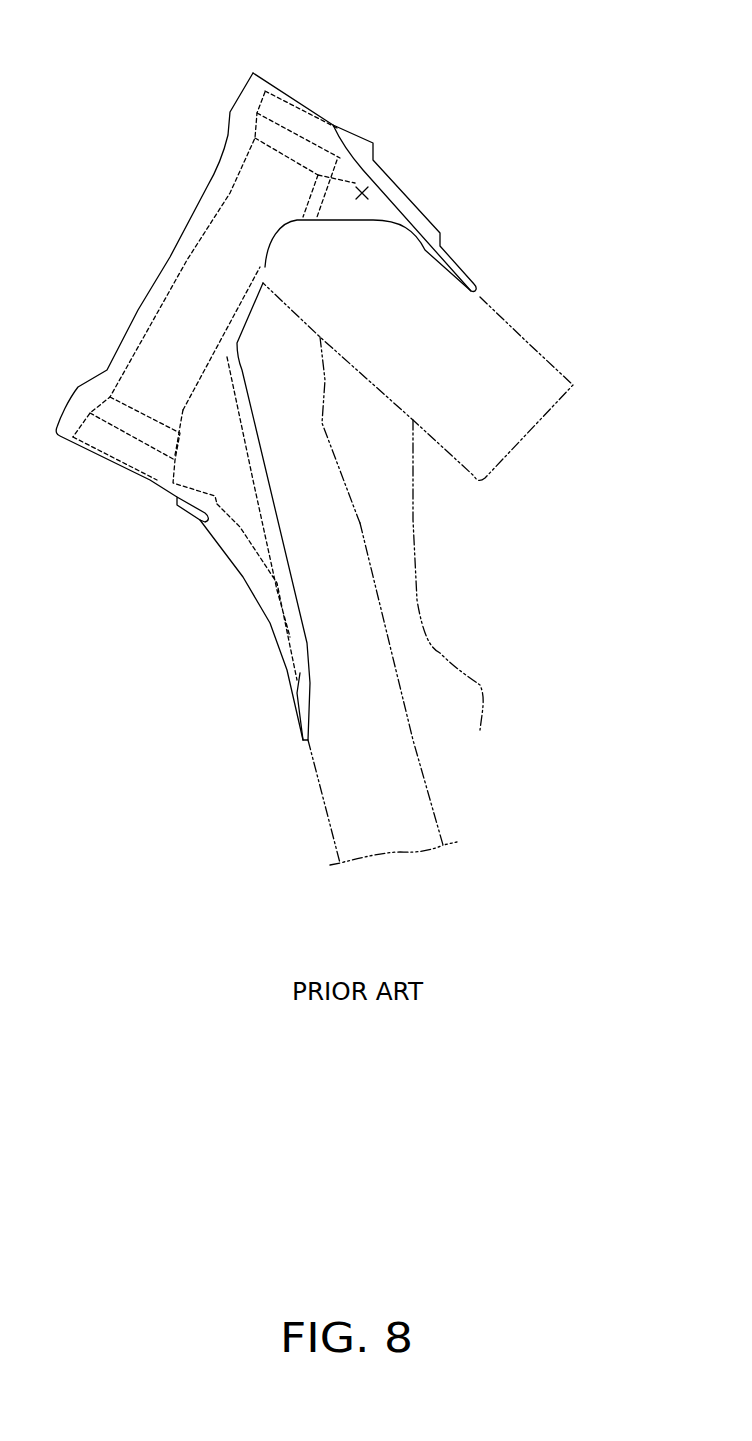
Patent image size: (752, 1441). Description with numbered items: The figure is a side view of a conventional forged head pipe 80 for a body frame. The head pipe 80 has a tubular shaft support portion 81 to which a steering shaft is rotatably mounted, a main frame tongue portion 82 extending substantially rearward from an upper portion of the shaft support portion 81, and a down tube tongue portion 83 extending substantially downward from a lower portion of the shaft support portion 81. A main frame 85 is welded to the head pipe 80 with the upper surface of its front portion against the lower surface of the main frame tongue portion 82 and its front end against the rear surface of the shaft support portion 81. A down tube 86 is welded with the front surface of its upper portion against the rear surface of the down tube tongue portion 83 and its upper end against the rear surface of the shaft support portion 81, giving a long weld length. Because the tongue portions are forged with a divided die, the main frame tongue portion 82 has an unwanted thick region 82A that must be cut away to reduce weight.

The head pipe 80 is at (163, 84).
The tubular shaft support portion 81 is at (138, 310).
The main frame tongue portion 82 is at (420, 210).
The thick region 82A is at (347, 203).
The down tube tongue portion 83 is at (243, 577).
The main frame 85 is at (527, 342).
The down tube 86 is at (323, 787).